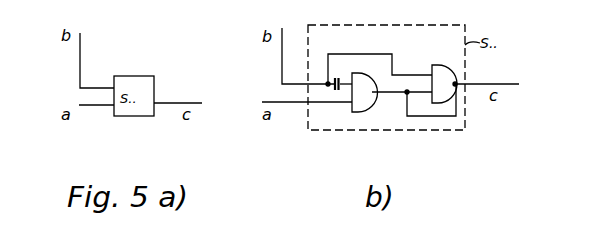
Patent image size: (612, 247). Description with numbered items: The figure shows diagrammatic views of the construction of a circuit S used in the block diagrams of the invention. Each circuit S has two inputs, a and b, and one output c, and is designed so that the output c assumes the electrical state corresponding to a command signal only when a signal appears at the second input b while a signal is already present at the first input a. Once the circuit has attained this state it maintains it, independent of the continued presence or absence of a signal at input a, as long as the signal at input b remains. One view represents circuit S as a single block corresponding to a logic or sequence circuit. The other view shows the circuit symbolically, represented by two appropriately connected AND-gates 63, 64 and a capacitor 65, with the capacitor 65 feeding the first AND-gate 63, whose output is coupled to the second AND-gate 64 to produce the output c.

The AND-gate 63 is at (367, 112).
The AND-gate 64 is at (447, 66).
The capacitor 65 is at (328, 88).